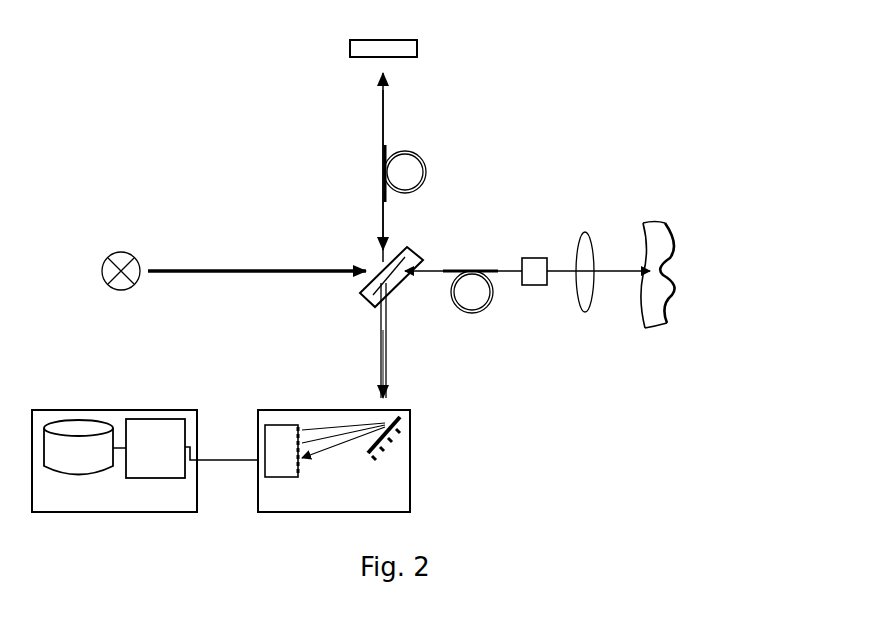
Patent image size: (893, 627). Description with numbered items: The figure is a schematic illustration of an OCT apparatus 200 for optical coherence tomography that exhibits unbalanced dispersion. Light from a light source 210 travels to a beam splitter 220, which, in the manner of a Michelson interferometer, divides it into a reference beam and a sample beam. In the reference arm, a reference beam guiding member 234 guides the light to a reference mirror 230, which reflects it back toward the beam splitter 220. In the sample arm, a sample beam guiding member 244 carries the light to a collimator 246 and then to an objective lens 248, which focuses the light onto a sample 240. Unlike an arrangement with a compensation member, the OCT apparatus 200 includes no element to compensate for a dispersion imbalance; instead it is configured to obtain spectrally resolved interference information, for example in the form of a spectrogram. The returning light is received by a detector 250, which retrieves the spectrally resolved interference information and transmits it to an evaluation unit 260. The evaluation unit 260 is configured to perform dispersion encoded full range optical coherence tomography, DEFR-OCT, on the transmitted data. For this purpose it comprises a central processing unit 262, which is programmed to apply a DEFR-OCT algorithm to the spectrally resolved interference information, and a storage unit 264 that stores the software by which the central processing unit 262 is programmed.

The OCT apparatus 200 is at (118, 84).
The light source 210 is at (121, 292).
The beam splitter 220 is at (368, 305).
The reference mirror 230 is at (347, 60).
The reference beam guiding member 234 is at (426, 173).
The sample 240 is at (666, 313).
The sample beam guiding member 244 is at (470, 311).
The collimator 246 is at (534, 286).
The objective lens 248 is at (586, 311).
The detector 250 is at (334, 461).
The evaluation unit 260 is at (145, 461).
The central processing unit 262 is at (155, 448).
The storage unit 264 is at (78, 447).